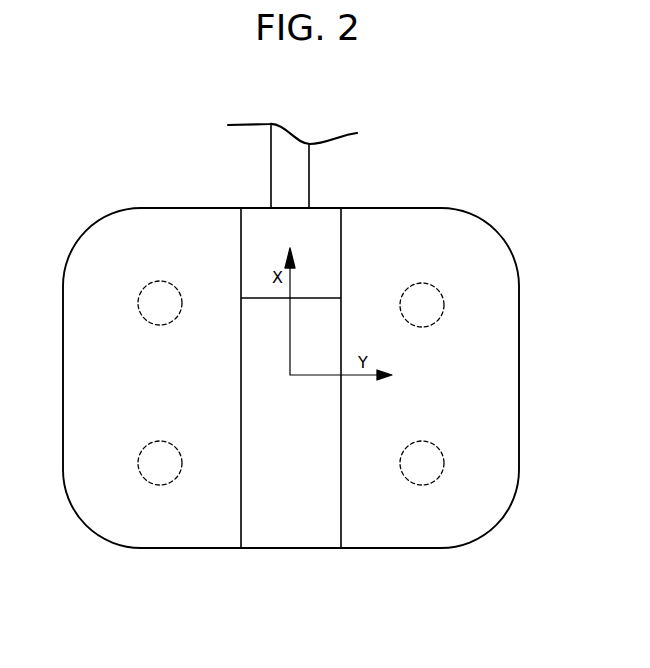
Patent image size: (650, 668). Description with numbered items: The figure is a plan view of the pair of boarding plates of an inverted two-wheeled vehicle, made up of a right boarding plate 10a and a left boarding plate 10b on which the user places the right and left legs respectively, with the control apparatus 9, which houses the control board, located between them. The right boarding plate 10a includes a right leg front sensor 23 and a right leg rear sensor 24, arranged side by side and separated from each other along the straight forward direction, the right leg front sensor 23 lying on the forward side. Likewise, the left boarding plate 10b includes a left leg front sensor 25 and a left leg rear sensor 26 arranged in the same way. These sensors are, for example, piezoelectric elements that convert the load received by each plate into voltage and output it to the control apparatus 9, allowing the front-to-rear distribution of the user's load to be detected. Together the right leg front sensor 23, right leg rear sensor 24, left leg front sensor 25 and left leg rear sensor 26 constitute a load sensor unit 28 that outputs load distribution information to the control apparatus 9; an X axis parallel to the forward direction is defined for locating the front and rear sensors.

The control apparatus 9 is at (310, 540).
The right boarding plate 10a is at (465, 242).
The left boarding plate 10b is at (117, 240).
The right leg front sensor 23 is at (444, 305).
The right leg rear sensor 24 is at (444, 463).
The left leg front sensor 25 is at (182, 303).
The left leg rear sensor 26 is at (182, 463).
The load sensor unit 28 is at (128, 517).